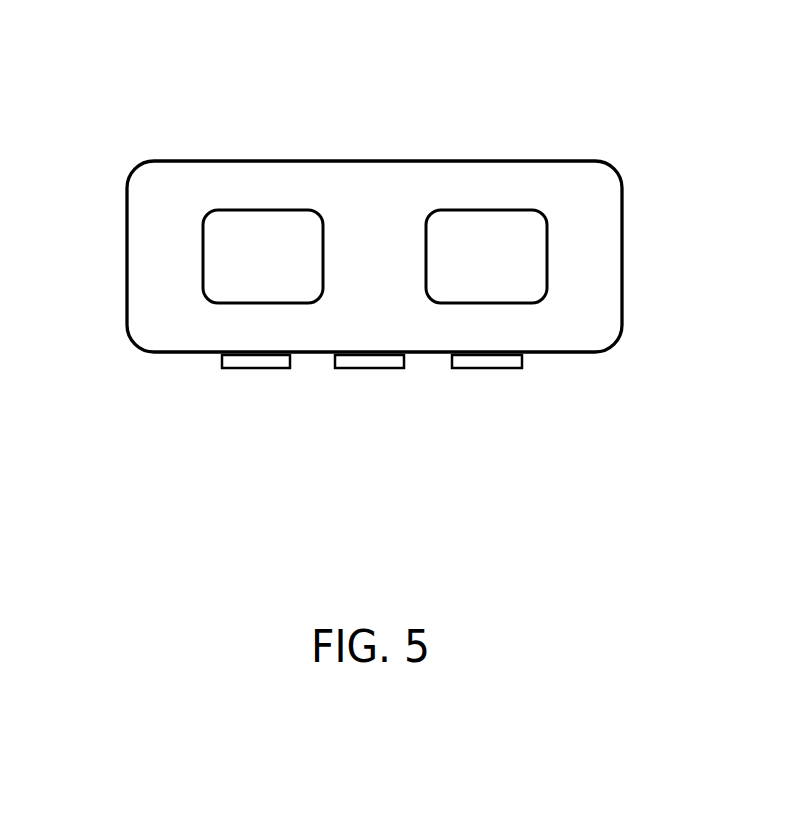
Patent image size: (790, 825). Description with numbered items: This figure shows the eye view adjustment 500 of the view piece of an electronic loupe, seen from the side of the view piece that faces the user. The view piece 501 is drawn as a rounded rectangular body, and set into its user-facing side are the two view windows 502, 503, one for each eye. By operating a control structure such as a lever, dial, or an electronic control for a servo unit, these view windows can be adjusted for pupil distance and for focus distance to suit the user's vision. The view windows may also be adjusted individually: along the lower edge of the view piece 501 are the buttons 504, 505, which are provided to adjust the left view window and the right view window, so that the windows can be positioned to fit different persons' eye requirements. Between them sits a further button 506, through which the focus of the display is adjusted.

The eye view adjustment 500 is at (357, 134).
The view piece 501 is at (403, 178).
The view window 502 is at (527, 263).
The view window 503 is at (223, 263).
The button 504 is at (247, 360).
The button 505 is at (492, 361).
The button 506 is at (370, 361).